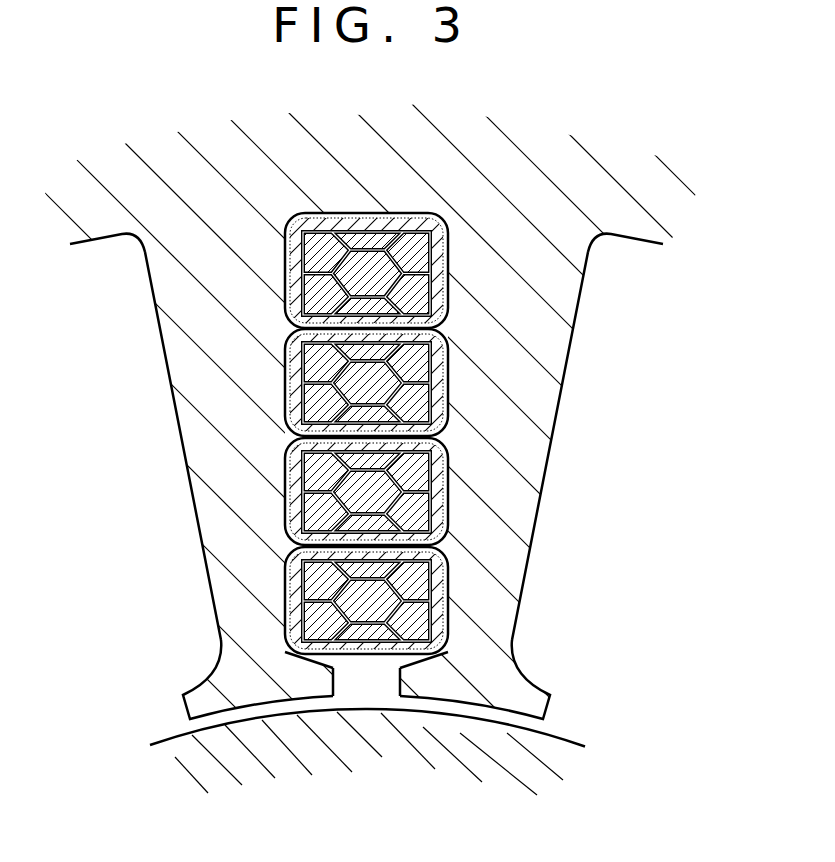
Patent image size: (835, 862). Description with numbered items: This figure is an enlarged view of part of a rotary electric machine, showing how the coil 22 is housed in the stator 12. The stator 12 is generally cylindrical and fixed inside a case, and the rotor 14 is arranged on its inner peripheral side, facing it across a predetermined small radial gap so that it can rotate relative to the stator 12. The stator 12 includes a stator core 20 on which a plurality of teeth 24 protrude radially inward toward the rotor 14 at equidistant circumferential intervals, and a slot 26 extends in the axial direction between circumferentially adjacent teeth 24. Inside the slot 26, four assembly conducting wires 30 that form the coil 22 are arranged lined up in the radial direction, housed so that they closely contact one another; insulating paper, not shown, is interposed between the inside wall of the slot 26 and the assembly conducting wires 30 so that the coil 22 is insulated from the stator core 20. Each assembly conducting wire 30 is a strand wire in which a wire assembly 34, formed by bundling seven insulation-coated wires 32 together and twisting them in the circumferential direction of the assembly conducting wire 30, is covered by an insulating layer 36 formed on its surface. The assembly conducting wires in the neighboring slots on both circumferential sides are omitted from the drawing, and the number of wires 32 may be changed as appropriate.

The stator 12 is at (417, 437).
The rotor 14 is at (578, 739).
The stator core 20 is at (417, 412).
The coil 22 is at (368, 681).
The teeth 24 is at (217, 637).
The slot 26 is at (593, 442).
The assembly conducting wire 30 is at (384, 392).
The wire 32 is at (274, 328).
The wire assembly 34 is at (446, 272).
The insulating layer 36 is at (410, 213).